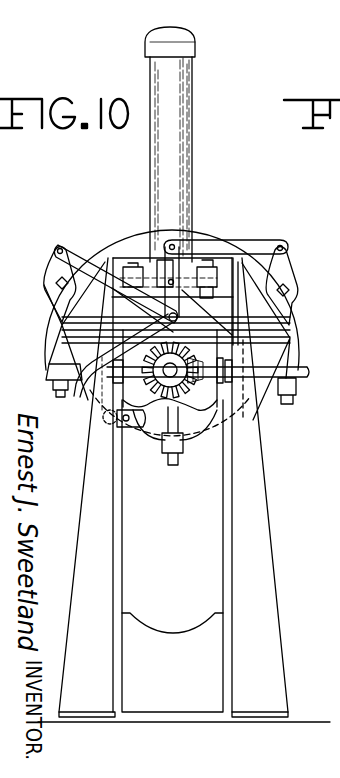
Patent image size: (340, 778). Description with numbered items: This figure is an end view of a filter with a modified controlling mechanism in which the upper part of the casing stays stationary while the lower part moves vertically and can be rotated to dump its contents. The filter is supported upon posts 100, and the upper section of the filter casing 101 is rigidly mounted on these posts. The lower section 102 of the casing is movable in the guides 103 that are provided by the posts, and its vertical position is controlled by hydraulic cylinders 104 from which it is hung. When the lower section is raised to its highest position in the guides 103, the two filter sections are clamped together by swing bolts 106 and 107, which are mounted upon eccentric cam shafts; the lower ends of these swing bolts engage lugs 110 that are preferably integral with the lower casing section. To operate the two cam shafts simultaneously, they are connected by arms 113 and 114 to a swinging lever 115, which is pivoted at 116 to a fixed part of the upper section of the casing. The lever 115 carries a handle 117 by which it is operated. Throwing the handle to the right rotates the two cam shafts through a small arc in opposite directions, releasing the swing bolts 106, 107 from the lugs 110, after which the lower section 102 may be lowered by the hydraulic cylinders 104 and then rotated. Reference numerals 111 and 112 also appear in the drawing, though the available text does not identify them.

The posts 100 is at (173, 485).
The upper section of the filter casing 101 is at (137, 247).
The lower section of the filter casing 102 is at (195, 436).
The guides 103 is at (223, 505).
The hydraulic cylinders 104 is at (172, 176).
The swing bolt 106 is at (292, 330).
The swing bolt 107 is at (60, 328).
The lugs 110 is at (282, 362).
The right pivot link 111 is at (283, 263).
The left pivot link 112 is at (58, 270).
The arm 113 is at (247, 245).
The arm 114 is at (73, 260).
The swinging lever 115 is at (180, 262).
The pivot 116 is at (235, 258).
The handle 117 is at (77, 398).